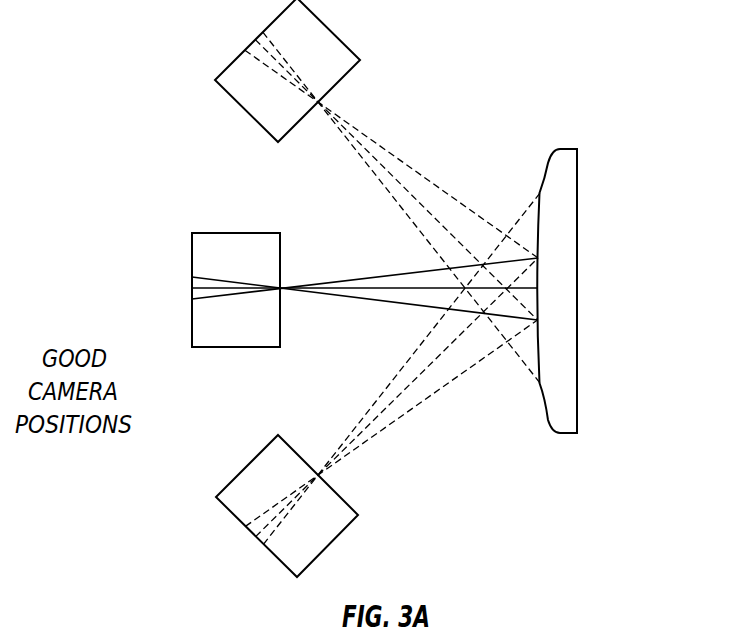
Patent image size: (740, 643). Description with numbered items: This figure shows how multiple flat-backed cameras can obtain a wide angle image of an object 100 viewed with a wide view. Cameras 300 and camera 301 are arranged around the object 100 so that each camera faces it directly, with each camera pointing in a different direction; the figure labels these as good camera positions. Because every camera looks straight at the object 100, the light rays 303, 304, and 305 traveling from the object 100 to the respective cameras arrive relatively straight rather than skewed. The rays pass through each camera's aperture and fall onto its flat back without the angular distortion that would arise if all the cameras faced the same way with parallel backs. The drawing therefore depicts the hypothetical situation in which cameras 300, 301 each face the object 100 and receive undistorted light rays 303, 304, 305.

The object 100 is at (592, 288).
The camera 300 is at (241, 402).
The camera 301 is at (263, 71).
The light rays 303 is at (365, 286).
The light rays 304 is at (392, 207).
The light rays 305 is at (392, 368).